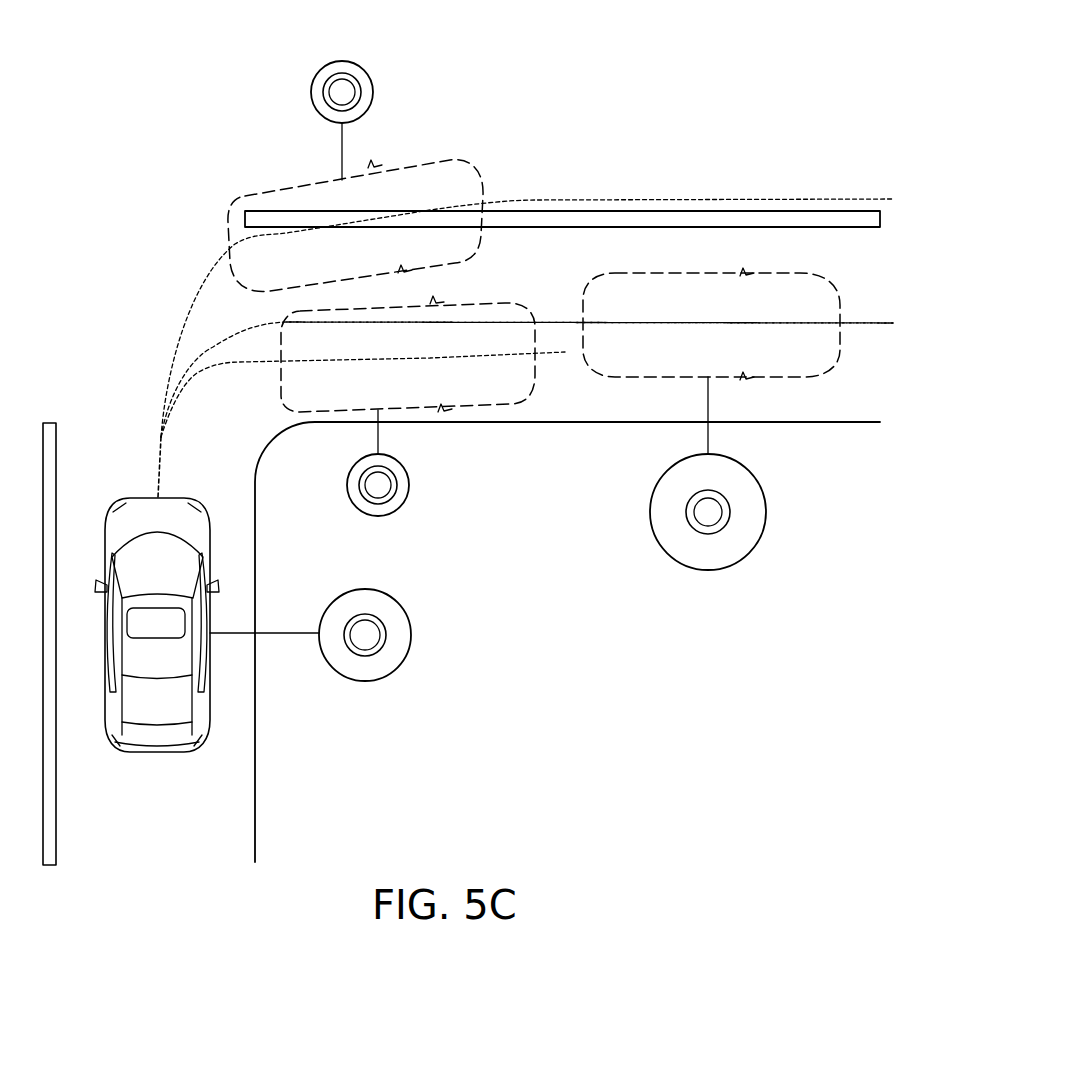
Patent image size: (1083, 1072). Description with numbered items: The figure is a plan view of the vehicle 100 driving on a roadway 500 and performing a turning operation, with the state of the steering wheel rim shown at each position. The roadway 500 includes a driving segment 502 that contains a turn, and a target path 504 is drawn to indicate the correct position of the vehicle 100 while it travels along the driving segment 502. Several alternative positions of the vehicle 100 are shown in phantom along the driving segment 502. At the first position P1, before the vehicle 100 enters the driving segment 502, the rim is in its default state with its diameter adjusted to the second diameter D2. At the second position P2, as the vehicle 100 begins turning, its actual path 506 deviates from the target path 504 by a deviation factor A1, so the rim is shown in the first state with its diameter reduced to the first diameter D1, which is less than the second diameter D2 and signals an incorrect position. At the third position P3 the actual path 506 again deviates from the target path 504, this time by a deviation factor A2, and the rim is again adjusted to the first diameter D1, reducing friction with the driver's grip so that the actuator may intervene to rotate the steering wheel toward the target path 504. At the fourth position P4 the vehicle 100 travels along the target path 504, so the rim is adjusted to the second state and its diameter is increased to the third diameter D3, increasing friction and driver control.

The vehicle 100 is at (157, 753).
The roadway 500 is at (283, 760).
The driving segment 502 is at (178, 215).
The target path 504 is at (557, 323).
The actual path 506 is at (535, 200).
The first position P1 is at (138, 498).
The second position P2 is at (267, 188).
The third position P3 is at (480, 407).
The fourth position P4 is at (840, 305).
The deviation factor A1 is at (306, 323).
The deviation factor A2 is at (276, 385).
The first diameter D1 is at (277, 28).
The second diameter D2 is at (319, 635).
The third diameter D3 is at (650, 512).